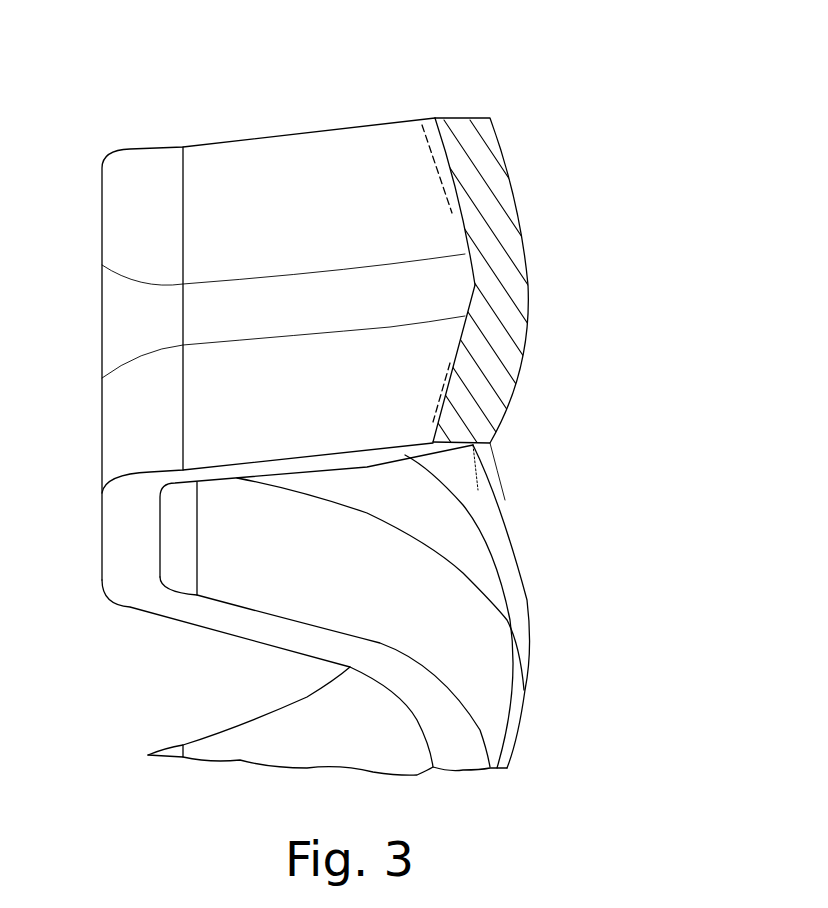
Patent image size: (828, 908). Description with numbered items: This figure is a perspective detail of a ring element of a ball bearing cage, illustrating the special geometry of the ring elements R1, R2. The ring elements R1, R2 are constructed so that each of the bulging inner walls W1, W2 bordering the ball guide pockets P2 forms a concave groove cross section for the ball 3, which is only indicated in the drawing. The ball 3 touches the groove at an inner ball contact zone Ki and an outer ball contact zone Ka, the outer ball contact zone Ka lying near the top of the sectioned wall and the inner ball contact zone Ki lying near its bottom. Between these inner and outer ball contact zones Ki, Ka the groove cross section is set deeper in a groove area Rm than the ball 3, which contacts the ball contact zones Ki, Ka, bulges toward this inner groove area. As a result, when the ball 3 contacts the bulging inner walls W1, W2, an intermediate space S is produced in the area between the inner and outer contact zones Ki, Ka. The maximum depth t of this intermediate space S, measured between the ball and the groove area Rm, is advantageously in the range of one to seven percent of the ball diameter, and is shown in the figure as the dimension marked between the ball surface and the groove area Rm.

The ball guide pocket P2 is at (223, 134).
The ball 3 is at (410, 107).
The ring element R1 is at (483, 181).
The ring element R2 is at (552, 280).
The groove area Rm is at (473, 273).
The intermediate space S is at (473, 294).
The outer ball contact zone Ka is at (443, 190).
The inner ball contact zone Ki is at (443, 387).
The bulging inner wall W1 is at (468, 238).
The bulging inner wall W2 is at (283, 295).
The maximum depth of the intermediate space t is at (445, 473).